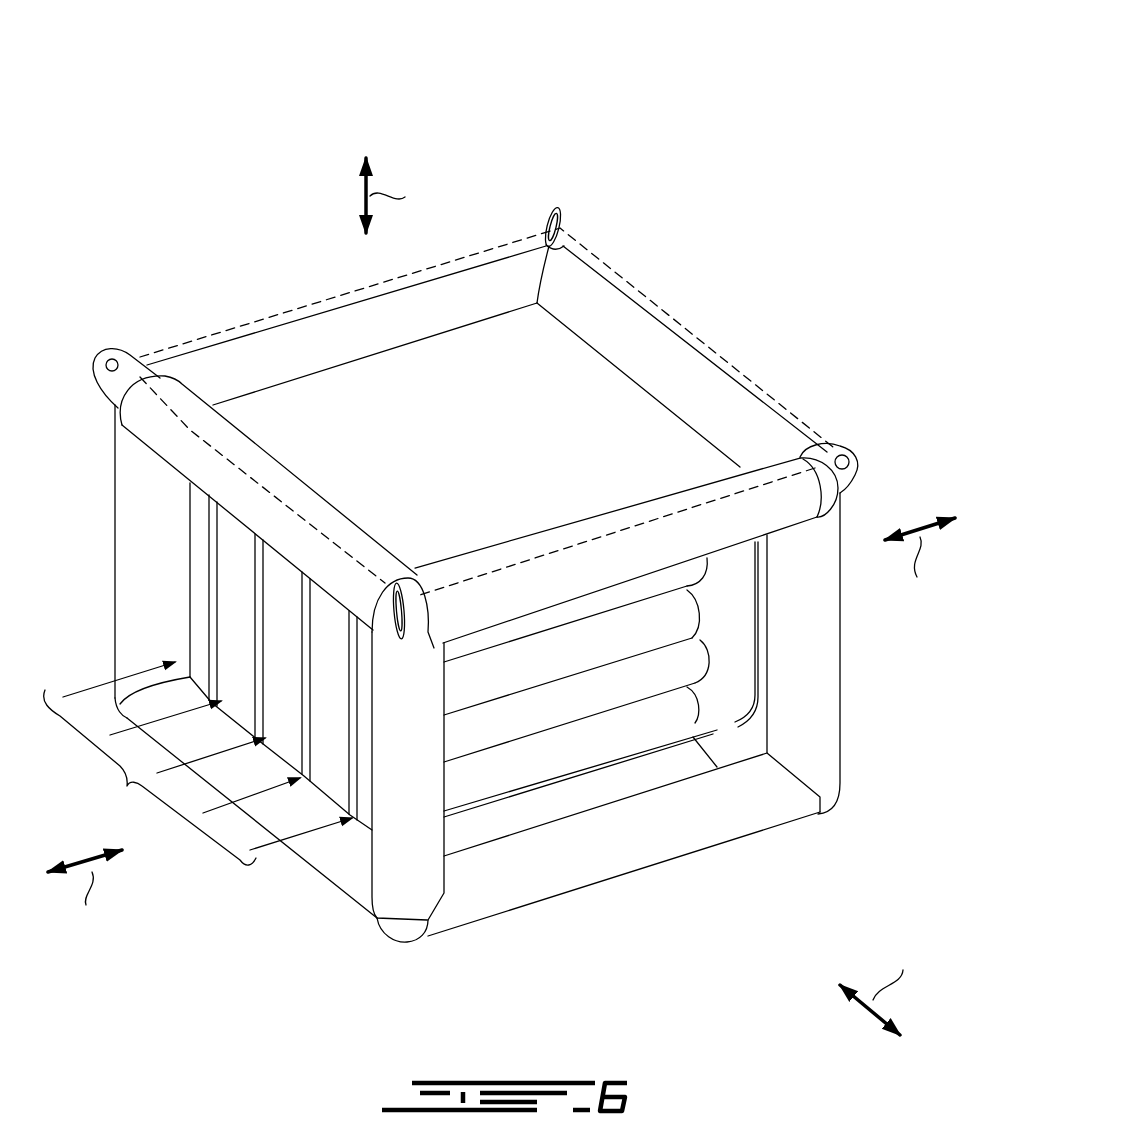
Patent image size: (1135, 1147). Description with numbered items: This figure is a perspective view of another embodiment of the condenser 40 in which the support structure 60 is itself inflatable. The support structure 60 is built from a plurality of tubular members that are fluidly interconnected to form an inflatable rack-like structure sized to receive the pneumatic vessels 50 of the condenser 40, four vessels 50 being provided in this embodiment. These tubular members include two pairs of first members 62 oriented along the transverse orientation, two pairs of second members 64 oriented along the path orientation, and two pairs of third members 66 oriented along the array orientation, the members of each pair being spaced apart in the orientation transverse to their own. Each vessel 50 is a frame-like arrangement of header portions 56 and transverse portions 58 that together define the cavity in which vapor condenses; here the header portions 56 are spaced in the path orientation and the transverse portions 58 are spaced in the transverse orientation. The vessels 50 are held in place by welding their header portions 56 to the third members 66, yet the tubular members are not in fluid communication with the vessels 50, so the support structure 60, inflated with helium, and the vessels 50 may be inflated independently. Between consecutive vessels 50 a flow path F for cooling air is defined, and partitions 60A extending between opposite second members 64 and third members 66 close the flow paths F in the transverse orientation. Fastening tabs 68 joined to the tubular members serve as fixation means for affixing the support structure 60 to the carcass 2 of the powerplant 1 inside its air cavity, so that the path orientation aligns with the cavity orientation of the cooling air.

The condenser 40 is at (722, 126).
The second members 64 is at (298, 353).
The powerplant 1 is at (486, 411).
The carcass 2 is at (705, 338).
The third members 66 is at (313, 512).
The first members 62 is at (413, 873).
The transverse portions 58 is at (535, 757).
The partitions 60A is at (492, 441).
The header portions 56 is at (240, 620).
The pneumatic vessel 50 is at (190, 555).
The flow path F is at (198, 763).
The fastening tabs 68 is at (838, 446).
The support structure 60 is at (658, 912).